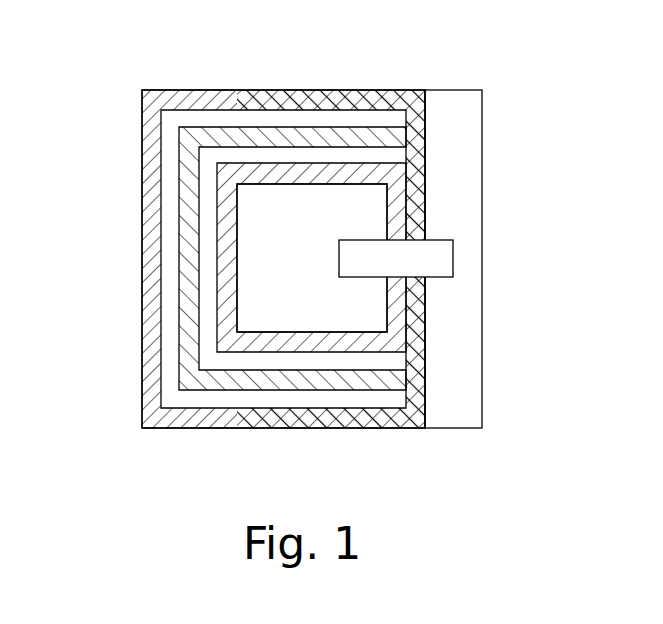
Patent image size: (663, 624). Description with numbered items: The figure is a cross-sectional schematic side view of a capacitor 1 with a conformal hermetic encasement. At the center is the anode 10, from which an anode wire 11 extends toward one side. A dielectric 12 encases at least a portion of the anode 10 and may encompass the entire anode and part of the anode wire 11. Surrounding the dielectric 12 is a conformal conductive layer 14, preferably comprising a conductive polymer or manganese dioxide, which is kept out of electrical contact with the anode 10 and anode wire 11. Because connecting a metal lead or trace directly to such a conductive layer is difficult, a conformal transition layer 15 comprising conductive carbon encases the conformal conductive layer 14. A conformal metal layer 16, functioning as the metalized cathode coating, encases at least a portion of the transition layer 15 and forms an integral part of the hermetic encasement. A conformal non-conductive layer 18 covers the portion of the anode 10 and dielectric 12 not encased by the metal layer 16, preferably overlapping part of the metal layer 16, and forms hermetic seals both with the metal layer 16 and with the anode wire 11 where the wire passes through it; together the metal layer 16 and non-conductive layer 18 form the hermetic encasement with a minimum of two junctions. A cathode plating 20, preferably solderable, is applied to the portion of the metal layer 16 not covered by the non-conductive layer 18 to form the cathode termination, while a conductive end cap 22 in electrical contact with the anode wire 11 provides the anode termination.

The capacitor 1 is at (128, 263).
The anode 10 is at (363, 210).
The anode wire 11 is at (443, 263).
The dielectric 12 is at (340, 170).
The conformal conductive layer 14 is at (282, 155).
The conformal transition layer 15 is at (236, 135).
The conformal metal layer 16 is at (188, 117).
The conformal non-conductive layer 18 is at (382, 418).
The cathode plating 20 is at (193, 418).
The conductive end cap 22 is at (463, 380).